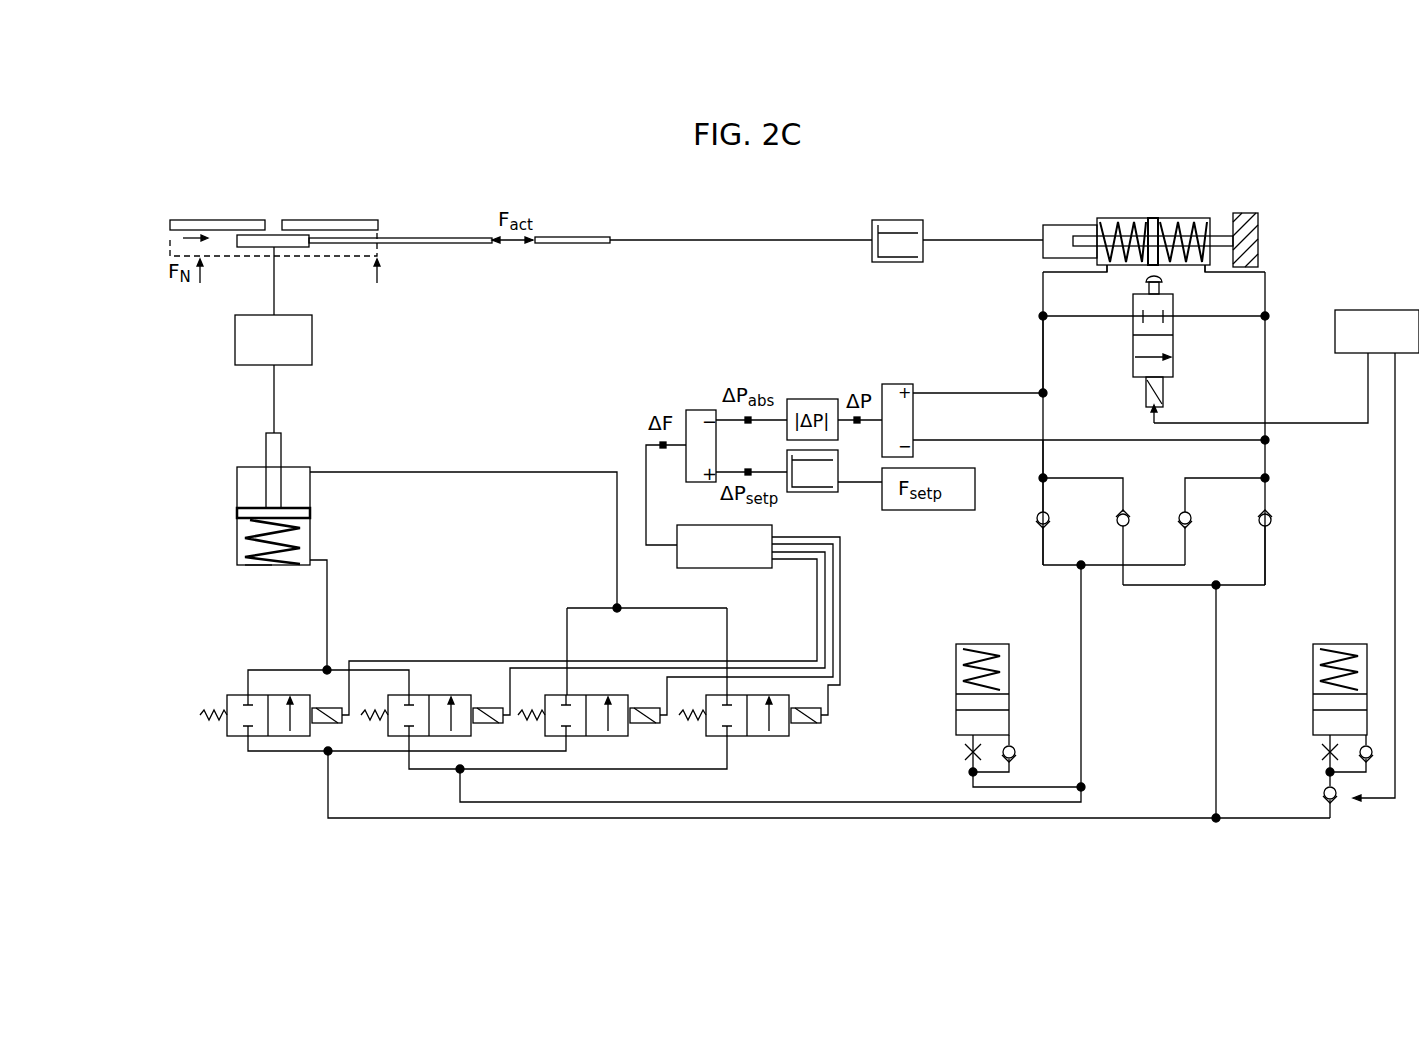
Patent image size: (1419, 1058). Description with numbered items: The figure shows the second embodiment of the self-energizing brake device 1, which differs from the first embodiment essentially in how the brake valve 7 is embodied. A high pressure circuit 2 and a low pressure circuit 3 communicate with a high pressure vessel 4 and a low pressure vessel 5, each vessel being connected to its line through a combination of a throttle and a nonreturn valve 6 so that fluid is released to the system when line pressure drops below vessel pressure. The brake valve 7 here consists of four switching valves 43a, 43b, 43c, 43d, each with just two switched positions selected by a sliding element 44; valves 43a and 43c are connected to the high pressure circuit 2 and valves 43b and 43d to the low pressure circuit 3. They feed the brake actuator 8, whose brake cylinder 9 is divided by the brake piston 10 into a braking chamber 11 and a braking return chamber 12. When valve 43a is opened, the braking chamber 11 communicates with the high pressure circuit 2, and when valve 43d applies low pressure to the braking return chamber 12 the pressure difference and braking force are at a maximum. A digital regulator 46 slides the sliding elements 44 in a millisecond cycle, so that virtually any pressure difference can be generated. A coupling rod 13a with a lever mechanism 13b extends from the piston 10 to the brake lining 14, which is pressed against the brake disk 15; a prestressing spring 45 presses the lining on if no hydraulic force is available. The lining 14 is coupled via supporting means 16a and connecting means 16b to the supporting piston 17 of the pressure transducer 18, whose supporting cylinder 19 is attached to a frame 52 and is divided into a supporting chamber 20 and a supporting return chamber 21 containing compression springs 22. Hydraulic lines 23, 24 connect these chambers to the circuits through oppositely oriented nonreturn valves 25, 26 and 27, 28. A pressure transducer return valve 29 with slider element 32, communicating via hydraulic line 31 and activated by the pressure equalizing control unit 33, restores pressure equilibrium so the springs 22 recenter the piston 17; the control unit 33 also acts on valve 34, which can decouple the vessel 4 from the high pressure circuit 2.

The device 1 is at (1356, 260).
The high pressure circuit 2 is at (750, 820).
The low pressure circuit 3 is at (862, 801).
The high pressure vessel 4 is at (1310, 655).
The low pressure vessel 5 is at (955, 655).
The throttle and nonreturn valve combination 6 is at (958, 749).
The brake valve 7 is at (524, 744).
The brake actuator 8 is at (261, 568).
The brake cylinder 9 is at (305, 566).
The brake piston 10 is at (310, 513).
The braking chamber 11 is at (237, 532).
The braking return chamber 12 is at (237, 475).
The coupling rod 13a is at (281, 449).
The lever mechanism 13b is at (312, 338).
The brake lining 14 is at (274, 233).
The brake disk 15 is at (357, 225).
The supporting means 16a is at (557, 237).
The connecting means 16b is at (887, 220).
The supporting piston 17 is at (1152, 222).
The pressure transducer 18 is at (1177, 210).
The supporting cylinder 19 is at (1103, 222).
The supporting chamber 20 is at (1195, 222).
The supporting return chamber 21 is at (1100, 222).
The compression springs 22 is at (1108, 266).
The hydraulic line 23 is at (1266, 383).
The hydraulic line 24 is at (1044, 428).
The nonreturn valve 25 is at (1032, 522).
The nonreturn valve 26 is at (1115, 515).
The nonreturn valve 27 is at (1193, 515).
The nonreturn valve 28 is at (1275, 515).
The pressure transducer return valve 29 is at (1175, 338).
The hydraulic line 31 is at (1085, 320).
The slider element 32 is at (1165, 385).
The pressure equalizing control unit 33 is at (1377, 331).
The valve 34 is at (1320, 791).
The switching valve 43a is at (237, 695).
The switching valve 43b is at (420, 695).
The switching valve 43c is at (578, 695).
The switching valve 43d is at (757, 695).
The sliding element 44 is at (342, 724).
The prestressing spring 45 is at (258, 566).
The digital regulator 46 is at (724, 546).
The frame 52 is at (1238, 258).